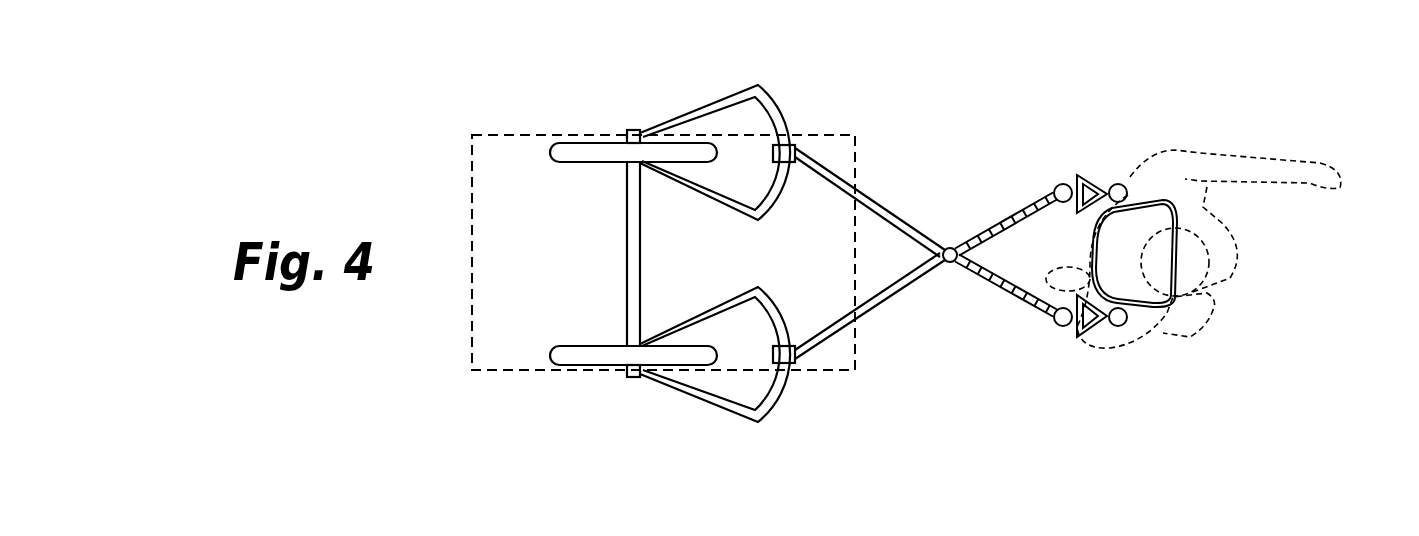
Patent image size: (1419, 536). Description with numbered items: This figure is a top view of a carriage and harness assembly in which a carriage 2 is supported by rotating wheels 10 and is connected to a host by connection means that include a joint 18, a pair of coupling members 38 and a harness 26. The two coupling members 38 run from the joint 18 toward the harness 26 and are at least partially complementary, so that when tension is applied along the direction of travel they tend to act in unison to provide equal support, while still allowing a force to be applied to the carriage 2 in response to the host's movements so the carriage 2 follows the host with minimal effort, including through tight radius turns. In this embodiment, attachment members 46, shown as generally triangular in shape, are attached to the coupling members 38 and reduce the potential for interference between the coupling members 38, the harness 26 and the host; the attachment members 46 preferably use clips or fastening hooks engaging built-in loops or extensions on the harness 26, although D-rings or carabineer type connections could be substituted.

The carriage 2 is at (457, 330).
The rotating wheels 10 is at (593, 142).
The joint 18 is at (950, 263).
The coupling members 38 is at (1013, 277).
The attachment members 46 is at (1080, 177).
The harness 26 is at (1160, 310).